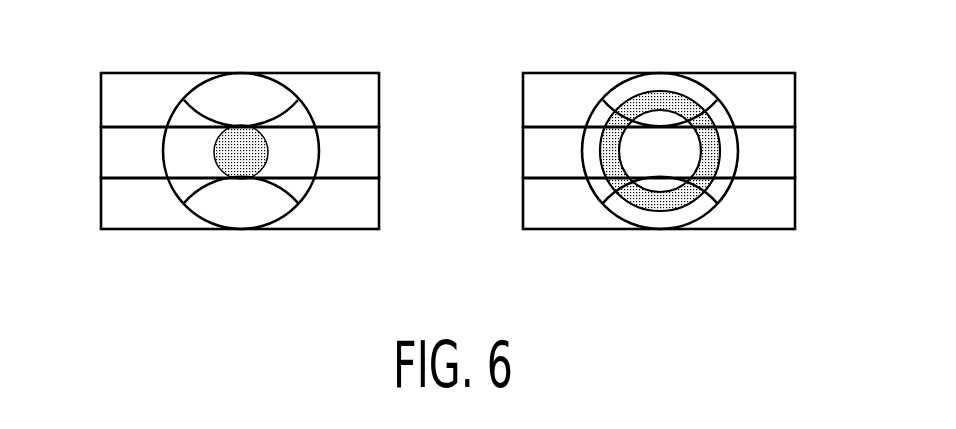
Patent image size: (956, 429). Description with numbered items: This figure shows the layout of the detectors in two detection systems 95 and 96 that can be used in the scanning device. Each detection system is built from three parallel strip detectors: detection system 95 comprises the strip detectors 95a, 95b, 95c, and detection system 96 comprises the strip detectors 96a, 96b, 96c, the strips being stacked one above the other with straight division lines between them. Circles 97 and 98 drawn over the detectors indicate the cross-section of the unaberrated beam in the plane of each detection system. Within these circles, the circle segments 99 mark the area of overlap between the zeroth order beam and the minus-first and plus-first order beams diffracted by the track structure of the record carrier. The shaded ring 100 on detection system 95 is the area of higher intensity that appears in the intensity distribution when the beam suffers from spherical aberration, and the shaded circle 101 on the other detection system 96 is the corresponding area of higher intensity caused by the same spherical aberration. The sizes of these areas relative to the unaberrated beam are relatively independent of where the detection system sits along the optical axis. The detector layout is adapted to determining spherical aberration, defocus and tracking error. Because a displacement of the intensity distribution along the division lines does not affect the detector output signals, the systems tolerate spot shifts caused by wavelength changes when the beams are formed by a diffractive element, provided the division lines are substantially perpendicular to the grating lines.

The detection system 95 is at (793, 48).
The strip detector 95a is at (774, 97).
The strip detector 95b is at (774, 153).
The strip detector 95c is at (774, 201).
The detection system 96 is at (109, 47).
The strip detector 96a is at (117, 96).
The strip detector 96b is at (117, 151).
The strip detector 96c is at (117, 201).
The circle 97 is at (697, 222).
The circle 98 is at (286, 222).
The circle segments 99 is at (605, 103).
The shaded ring 100 is at (684, 105).
The circle 101 is at (240, 135).